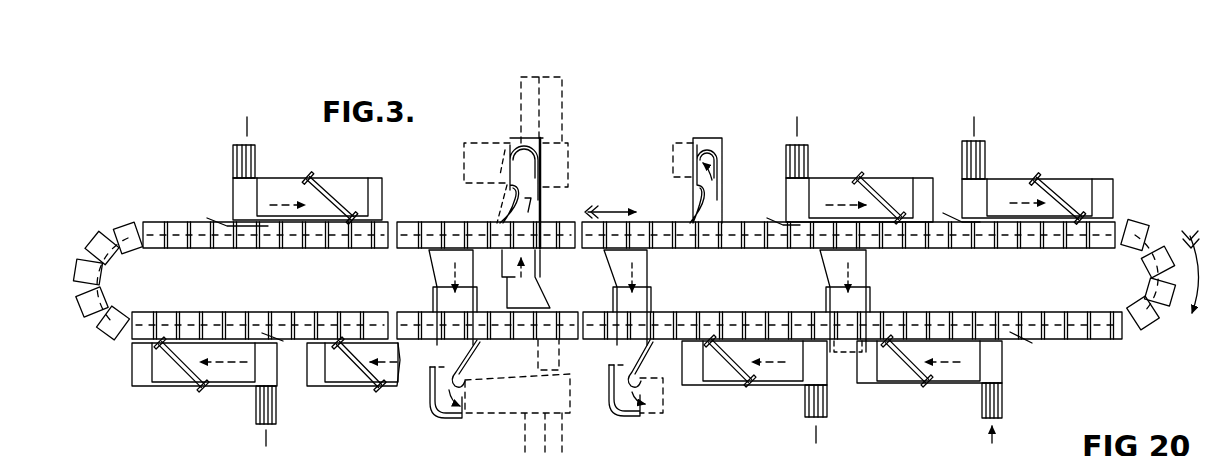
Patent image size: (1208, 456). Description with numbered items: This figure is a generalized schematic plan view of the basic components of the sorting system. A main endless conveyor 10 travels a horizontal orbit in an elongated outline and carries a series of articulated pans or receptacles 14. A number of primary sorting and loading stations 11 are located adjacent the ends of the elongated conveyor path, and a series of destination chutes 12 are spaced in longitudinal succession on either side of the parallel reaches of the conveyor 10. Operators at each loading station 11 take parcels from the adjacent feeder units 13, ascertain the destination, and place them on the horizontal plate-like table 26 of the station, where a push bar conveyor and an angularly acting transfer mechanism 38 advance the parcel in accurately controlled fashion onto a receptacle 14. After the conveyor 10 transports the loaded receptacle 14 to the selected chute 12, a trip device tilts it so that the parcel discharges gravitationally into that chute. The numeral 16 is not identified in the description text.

The main endless conveyor 10 is at (1095, 343).
The primary sorting and loading station 11 is at (818, 172).
The destination chute 12 is at (418, 388).
The feeder unit 13 is at (276, 404).
The articulated pan or receptacle 14 is at (723, 312).
The arm 16 is at (462, 348).
The table 26 is at (887, 190).
The transfer mechanism 38 is at (1065, 195).